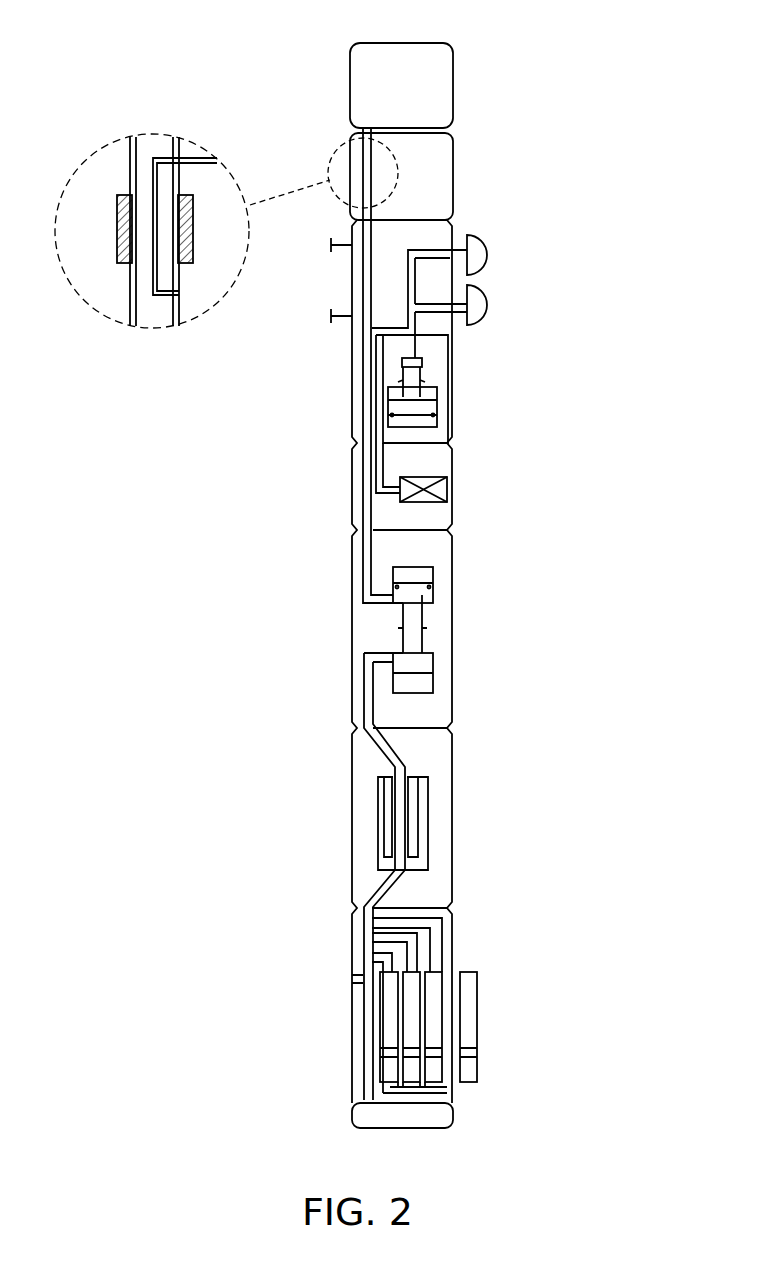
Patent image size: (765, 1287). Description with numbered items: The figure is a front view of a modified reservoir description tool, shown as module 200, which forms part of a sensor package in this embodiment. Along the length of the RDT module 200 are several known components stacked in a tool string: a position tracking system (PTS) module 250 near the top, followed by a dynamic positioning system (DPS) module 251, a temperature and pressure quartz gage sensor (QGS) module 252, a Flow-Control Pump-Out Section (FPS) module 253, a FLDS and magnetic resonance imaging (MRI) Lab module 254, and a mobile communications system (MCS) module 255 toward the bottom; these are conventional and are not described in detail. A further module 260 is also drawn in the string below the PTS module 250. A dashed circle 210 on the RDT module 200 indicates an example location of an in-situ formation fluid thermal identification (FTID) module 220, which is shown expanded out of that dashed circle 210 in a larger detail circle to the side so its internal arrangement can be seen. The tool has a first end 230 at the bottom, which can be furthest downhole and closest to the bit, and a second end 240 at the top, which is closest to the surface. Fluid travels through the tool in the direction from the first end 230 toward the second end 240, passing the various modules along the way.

The module 200 is at (592, 40).
The dashed circle 210 is at (350, 194).
The in-situ formation fluid thermal identification (FTID) module 220 is at (100, 313).
The first end 230 is at (352, 1112).
The second end 240 is at (370, 43).
The position tracking system (PTS) module 250 is at (426, 101).
The dynamic positioning system (DPS) module 251 is at (488, 220).
The temperature and pressure quartz gage sensor (QGS) module 252 is at (453, 470).
The Flow-Control Pump-Out Section (FPS) module 253 is at (453, 632).
The FLDS and magnetic resonance imaging (MRI) Lab module 254 is at (453, 802).
The mobile communications system (MCS) module 255 is at (477, 993).
The power module 260 is at (447, 191).